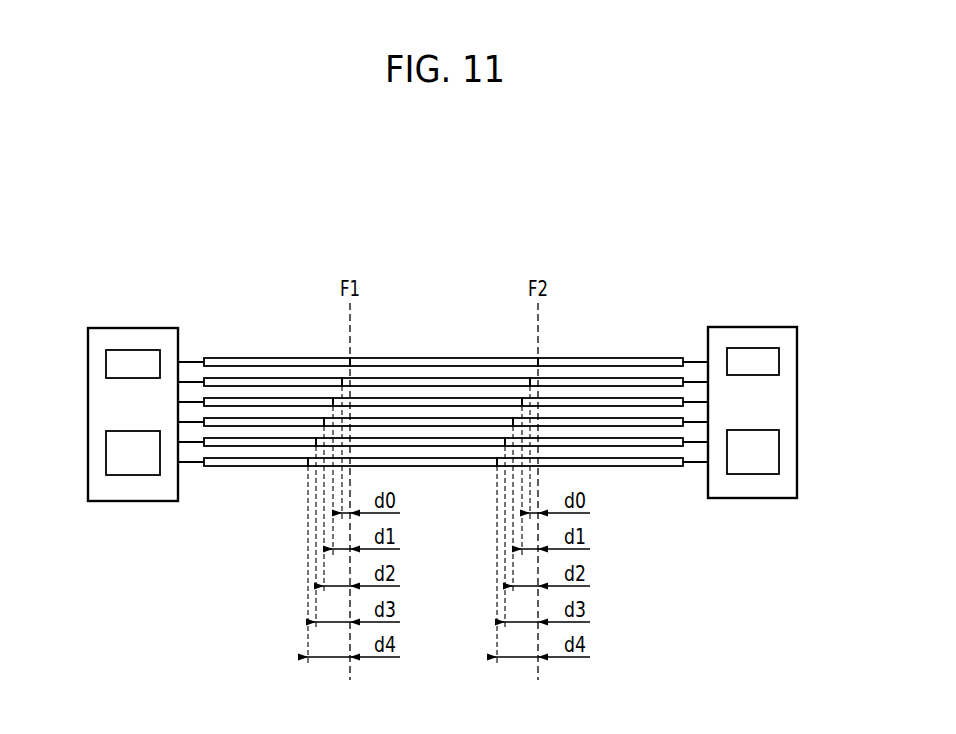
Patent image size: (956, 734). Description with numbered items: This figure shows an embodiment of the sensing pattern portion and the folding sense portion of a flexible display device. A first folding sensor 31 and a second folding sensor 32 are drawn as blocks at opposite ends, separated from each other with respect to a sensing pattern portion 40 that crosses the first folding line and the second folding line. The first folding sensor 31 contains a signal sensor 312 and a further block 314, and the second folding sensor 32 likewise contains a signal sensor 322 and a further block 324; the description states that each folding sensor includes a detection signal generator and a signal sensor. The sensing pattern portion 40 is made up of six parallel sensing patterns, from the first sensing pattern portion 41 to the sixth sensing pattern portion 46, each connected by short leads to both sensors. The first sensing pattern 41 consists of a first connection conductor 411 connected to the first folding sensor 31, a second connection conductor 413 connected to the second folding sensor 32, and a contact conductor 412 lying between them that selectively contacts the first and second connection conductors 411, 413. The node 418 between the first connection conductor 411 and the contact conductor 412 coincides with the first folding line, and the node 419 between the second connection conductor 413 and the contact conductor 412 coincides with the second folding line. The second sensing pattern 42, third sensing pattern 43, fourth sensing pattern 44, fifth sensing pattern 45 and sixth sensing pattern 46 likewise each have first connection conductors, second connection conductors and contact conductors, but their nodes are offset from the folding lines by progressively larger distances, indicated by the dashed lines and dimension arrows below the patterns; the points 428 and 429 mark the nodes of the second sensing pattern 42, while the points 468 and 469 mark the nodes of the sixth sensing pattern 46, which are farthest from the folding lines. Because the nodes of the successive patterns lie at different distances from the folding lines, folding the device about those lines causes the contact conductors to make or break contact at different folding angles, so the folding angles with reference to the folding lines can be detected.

The first folding sensor 31 is at (778, 316).
The signal sensor 312 is at (750, 475).
The second terminal 314 is at (746, 348).
The second folding sensor 32 is at (110, 318).
The signal sensor 322 is at (133, 476).
The second terminal 324 is at (140, 350).
The sensing pattern portion 40 is at (253, 346).
The first sensing pattern portion 41 is at (436, 286).
The first connection conductor 411 is at (320, 357).
The contact conductor 412 is at (441, 357).
The second connection conductor 413 is at (609, 357).
The node 418 is at (350, 362).
The node 419 is at (538, 362).
The second sensing pattern 42 is at (443, 298).
The first bending point of second wiring line 428 is at (342, 382).
The second bending point of second wiring line 429 is at (530, 382).
The third sensing pattern 43 is at (219, 419).
The fourth sensing pattern 44 is at (238, 439).
The fifth sensing pattern 45 is at (257, 459).
The sixth sensing pattern portion 46 is at (443, 546).
The first bending point of sixth wiring line 468 is at (308, 467).
The second bending point of sixth wiring line 469 is at (497, 466).